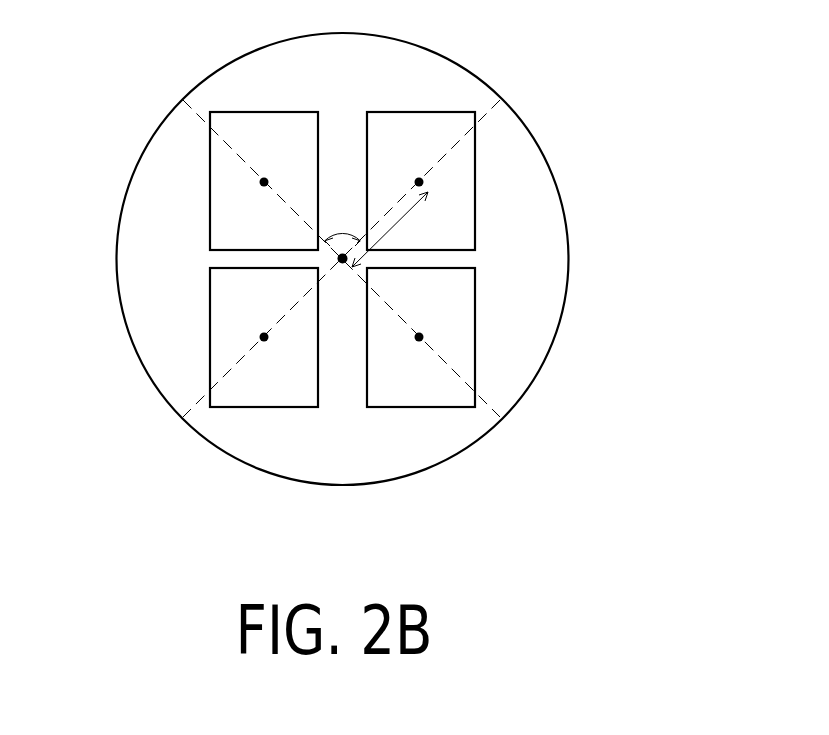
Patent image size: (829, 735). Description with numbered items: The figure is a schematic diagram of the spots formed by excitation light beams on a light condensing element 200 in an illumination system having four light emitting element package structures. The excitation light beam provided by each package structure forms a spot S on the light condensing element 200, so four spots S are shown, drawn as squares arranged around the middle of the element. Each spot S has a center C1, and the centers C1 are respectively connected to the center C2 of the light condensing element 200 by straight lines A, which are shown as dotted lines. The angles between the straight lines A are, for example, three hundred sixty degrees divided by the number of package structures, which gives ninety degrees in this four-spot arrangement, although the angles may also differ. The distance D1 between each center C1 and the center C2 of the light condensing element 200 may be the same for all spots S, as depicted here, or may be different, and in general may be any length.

The light condensing element 200 is at (148, 141).
The spot S is at (224, 340).
The center of spot C1 is at (267, 343).
The center of light condensing element C2 is at (342, 265).
The distance D1 is at (410, 217).
The straight line A is at (487, 399).